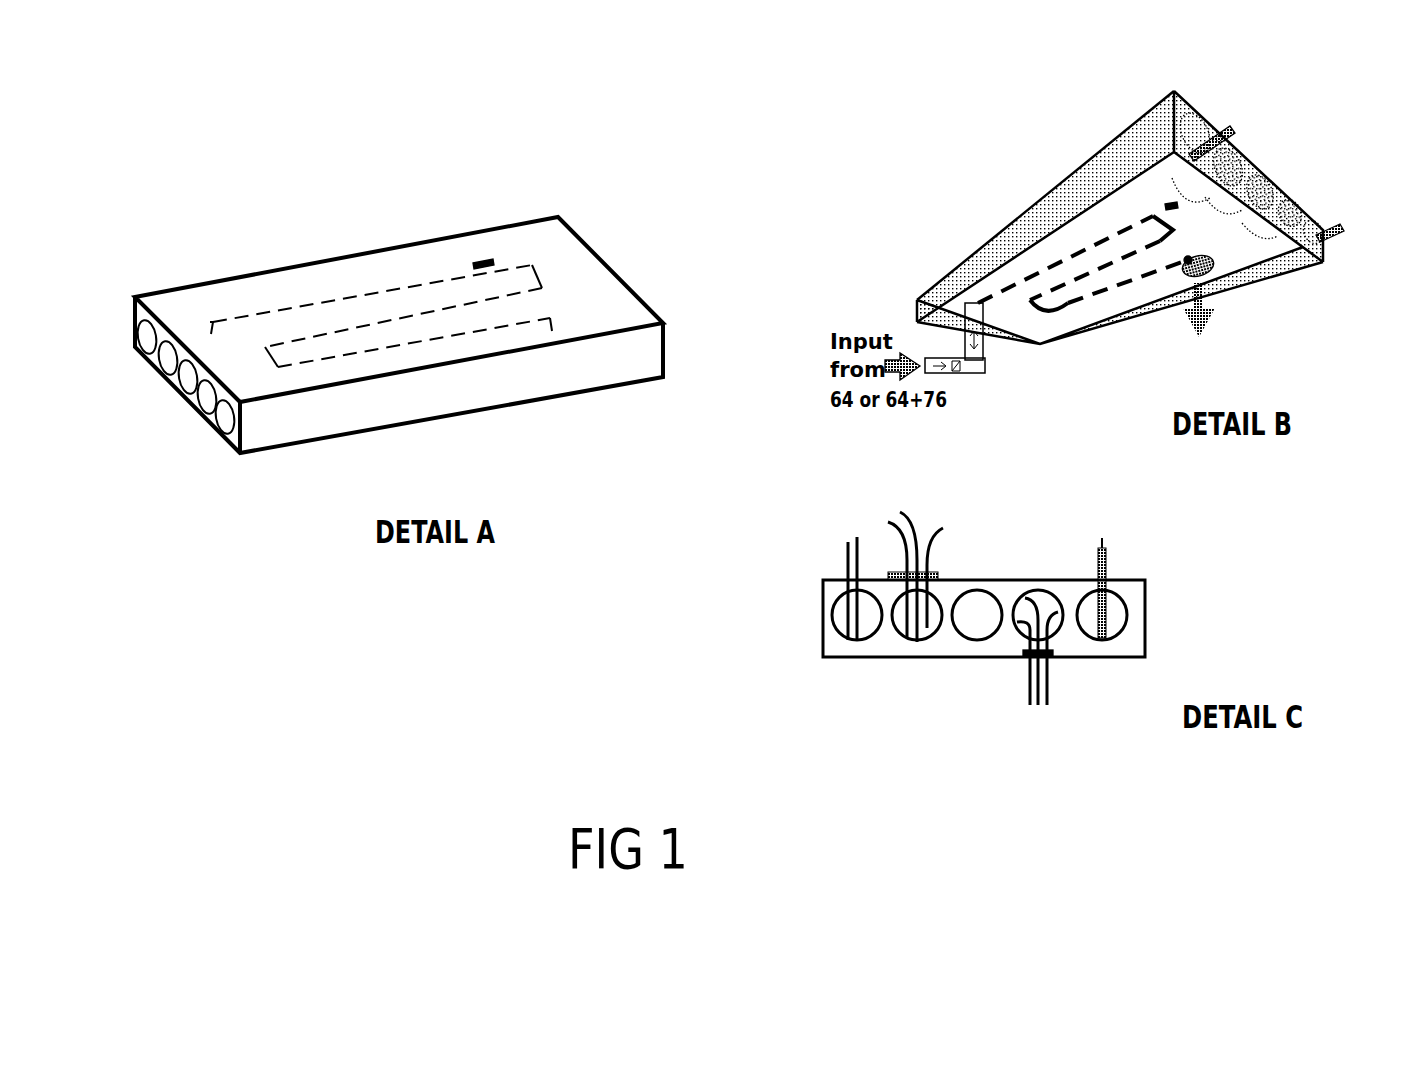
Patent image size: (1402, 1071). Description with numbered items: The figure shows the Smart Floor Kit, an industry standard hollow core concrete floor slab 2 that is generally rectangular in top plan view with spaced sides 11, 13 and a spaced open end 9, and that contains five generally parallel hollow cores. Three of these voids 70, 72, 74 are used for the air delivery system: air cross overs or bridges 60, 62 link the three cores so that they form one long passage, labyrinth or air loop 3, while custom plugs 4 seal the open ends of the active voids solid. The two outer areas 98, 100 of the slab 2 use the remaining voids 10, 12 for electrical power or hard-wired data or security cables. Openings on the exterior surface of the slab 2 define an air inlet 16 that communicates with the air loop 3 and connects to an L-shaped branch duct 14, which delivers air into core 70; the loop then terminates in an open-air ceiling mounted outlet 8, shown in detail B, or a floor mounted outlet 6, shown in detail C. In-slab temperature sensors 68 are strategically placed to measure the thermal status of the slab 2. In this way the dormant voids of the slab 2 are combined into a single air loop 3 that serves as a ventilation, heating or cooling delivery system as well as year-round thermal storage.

The hollow core concrete floor slab 2 is at (530, 221).
The passage or labyrinth 3 is at (357, 338).
The custom plugs 4 is at (207, 357).
The floor mounted outlet 6 is at (938, 567).
The ceiling mounted outlet 8 is at (577, 405).
The open end 9 is at (190, 410).
The void 10 is at (213, 433).
The side 11 is at (473, 262).
The void 12 is at (137, 363).
The side 13 is at (442, 392).
The L-shaped branch duct 14 is at (210, 326).
The air inlet 16 is at (967, 303).
The air cross over or bridge 60 is at (537, 275).
The air cross over or bridge 62 is at (268, 361).
The in-slab temperature sensor 68 is at (425, 243).
The hollow core or void 70 is at (400, 292).
The hollow core or void 72 is at (362, 325).
The hollow core or void 74 is at (435, 338).
The outer area 98 is at (1297, 270).
The outer area 100 is at (1153, 172).